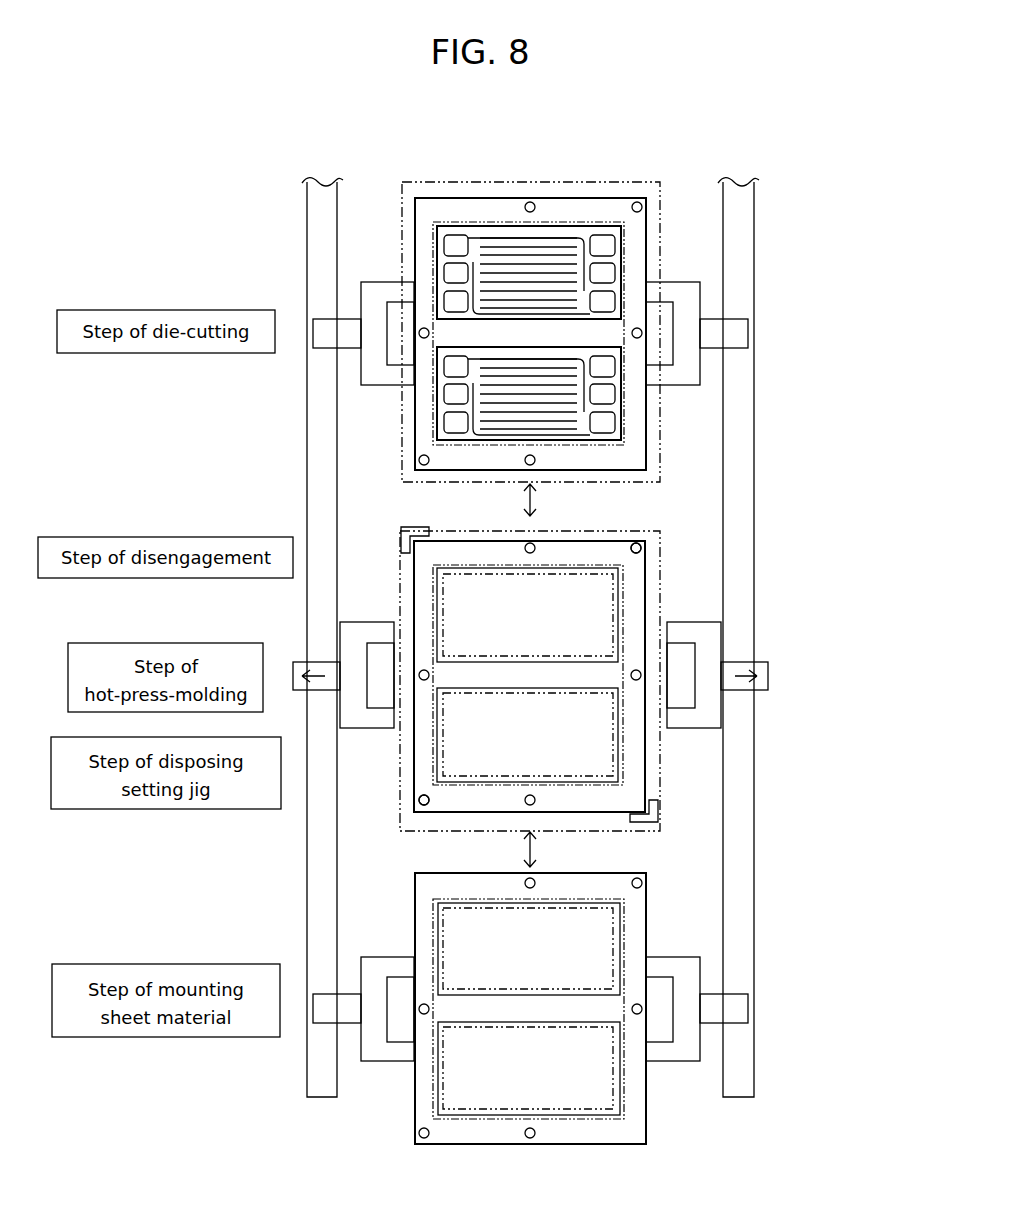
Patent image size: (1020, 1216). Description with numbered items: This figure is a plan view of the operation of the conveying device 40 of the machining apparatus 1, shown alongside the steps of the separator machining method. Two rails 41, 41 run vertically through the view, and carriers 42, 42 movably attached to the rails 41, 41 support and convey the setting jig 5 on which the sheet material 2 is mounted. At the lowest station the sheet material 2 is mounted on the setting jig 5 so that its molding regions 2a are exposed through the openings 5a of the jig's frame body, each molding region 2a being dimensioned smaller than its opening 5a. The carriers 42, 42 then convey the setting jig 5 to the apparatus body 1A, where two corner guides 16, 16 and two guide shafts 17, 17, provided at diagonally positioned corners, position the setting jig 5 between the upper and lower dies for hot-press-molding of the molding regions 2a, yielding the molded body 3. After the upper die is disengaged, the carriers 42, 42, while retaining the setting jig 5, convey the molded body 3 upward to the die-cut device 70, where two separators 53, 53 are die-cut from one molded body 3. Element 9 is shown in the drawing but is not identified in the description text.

The machining apparatus 1 is at (143, 148).
The apparatus body 1A is at (227, 268).
The sheet material 2 is at (628, 606).
The molding region 2a is at (613, 758).
The molded body 3 is at (627, 267).
The setting jig 5 is at (385, 176).
The opening 5a is at (565, 629).
The molded separator 9 is at (428, 410).
The corner guide 16 is at (405, 529).
The guide shaft 17 is at (641, 546).
The conveying device 40 is at (325, 443).
The rail 41 is at (308, 886).
The carrier 42 is at (367, 296).
The separator 53 is at (572, 237).
The die-cut device 70 is at (664, 400).